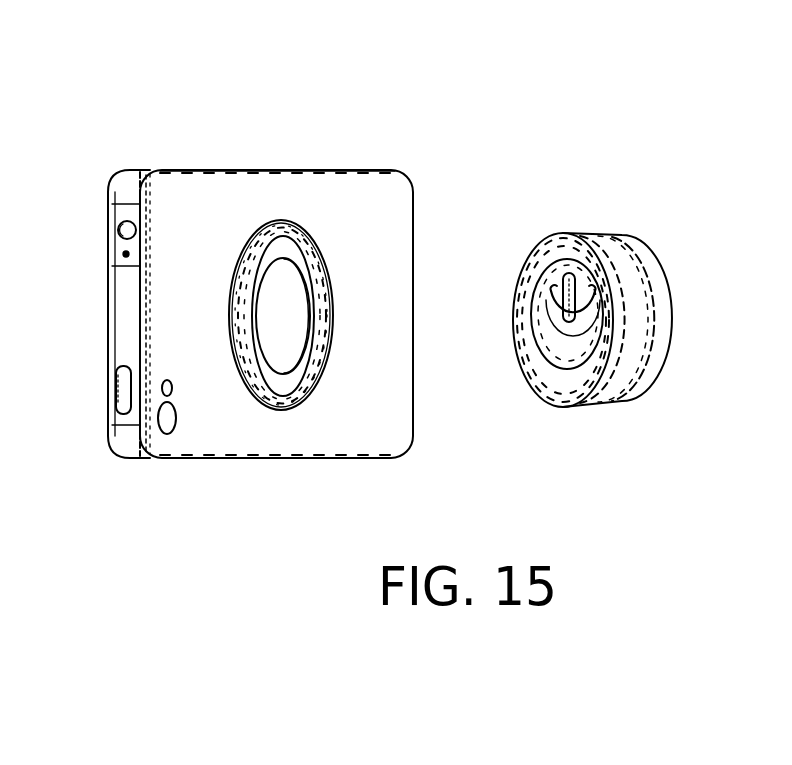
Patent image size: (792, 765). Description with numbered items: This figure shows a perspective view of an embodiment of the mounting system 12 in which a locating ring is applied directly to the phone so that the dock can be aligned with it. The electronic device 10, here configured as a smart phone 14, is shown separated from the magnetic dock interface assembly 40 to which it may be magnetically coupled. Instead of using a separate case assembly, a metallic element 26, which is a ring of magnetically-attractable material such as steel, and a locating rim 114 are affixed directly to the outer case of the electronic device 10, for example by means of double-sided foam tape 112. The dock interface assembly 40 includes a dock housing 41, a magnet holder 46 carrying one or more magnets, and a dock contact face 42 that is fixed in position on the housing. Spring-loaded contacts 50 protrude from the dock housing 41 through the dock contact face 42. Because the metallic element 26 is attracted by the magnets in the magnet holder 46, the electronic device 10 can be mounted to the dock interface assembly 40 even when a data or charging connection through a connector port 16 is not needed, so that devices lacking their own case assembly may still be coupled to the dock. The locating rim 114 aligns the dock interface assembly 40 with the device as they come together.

The electronic device 10 is at (185, 445).
The mounting system 12 is at (693, 182).
The smart phone 14 is at (398, 204).
The connector port 16 is at (300, 130).
The metallic element 26 is at (302, 372).
The dock interface assembly 40 is at (670, 290).
The dock housing 41 is at (593, 224).
The dock contact face 42 is at (572, 332).
The magnet holder 46 is at (560, 385).
The contacts 50 is at (567, 273).
The double-sided foam tape 112 is at (228, 303).
The locating rim 114 is at (288, 223).